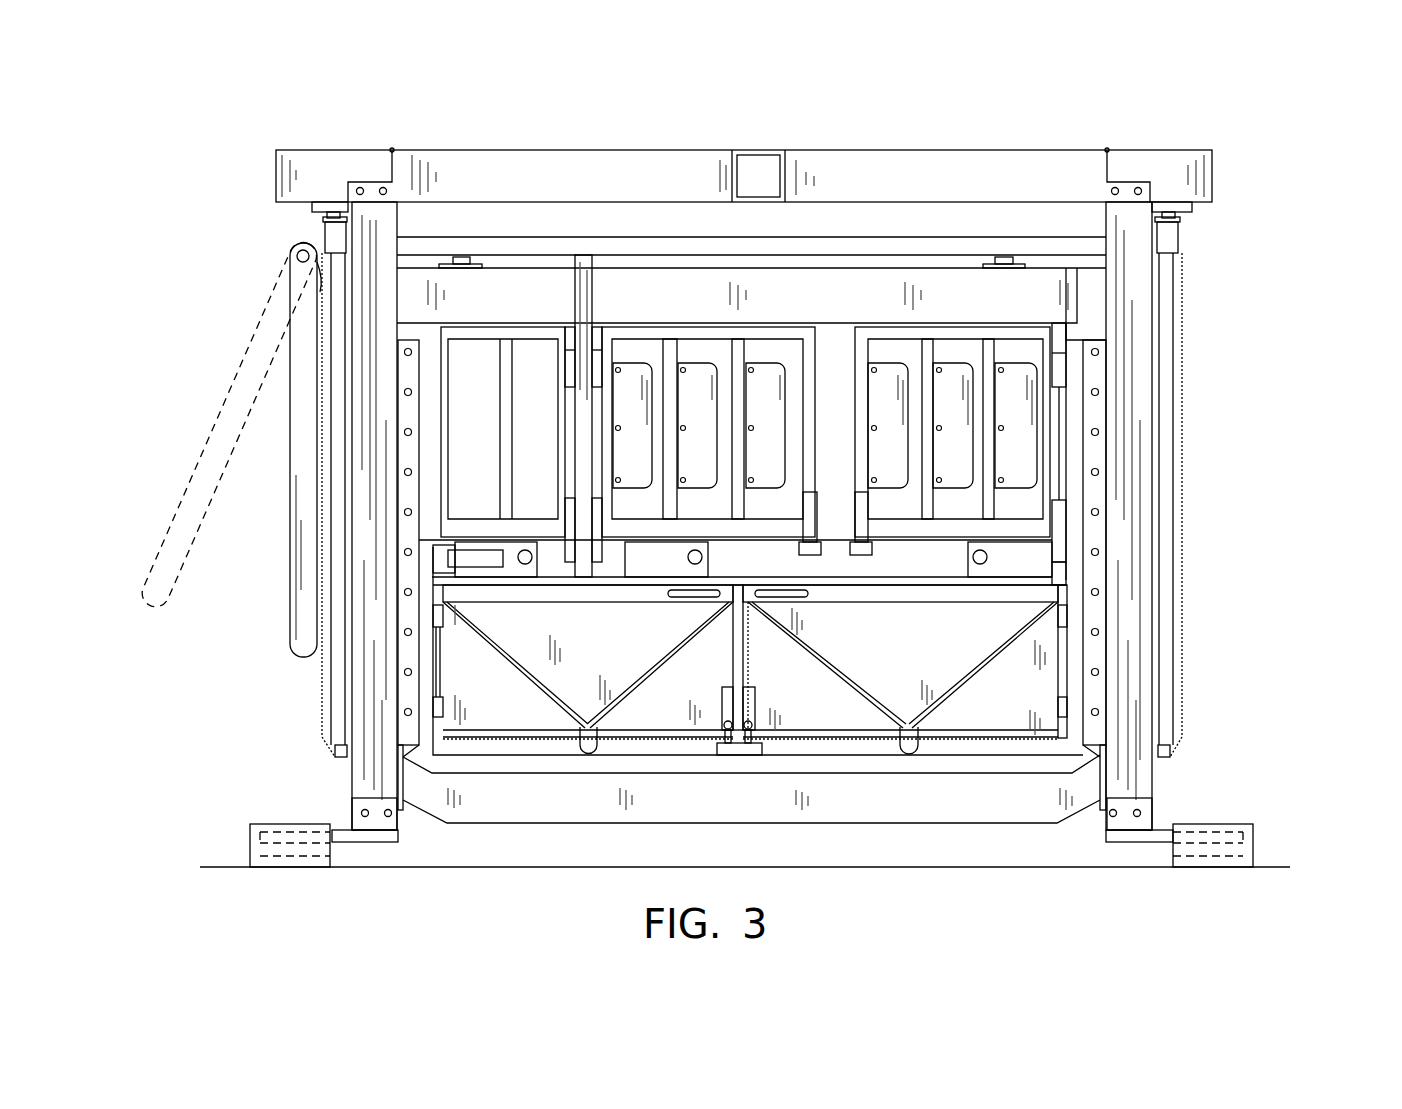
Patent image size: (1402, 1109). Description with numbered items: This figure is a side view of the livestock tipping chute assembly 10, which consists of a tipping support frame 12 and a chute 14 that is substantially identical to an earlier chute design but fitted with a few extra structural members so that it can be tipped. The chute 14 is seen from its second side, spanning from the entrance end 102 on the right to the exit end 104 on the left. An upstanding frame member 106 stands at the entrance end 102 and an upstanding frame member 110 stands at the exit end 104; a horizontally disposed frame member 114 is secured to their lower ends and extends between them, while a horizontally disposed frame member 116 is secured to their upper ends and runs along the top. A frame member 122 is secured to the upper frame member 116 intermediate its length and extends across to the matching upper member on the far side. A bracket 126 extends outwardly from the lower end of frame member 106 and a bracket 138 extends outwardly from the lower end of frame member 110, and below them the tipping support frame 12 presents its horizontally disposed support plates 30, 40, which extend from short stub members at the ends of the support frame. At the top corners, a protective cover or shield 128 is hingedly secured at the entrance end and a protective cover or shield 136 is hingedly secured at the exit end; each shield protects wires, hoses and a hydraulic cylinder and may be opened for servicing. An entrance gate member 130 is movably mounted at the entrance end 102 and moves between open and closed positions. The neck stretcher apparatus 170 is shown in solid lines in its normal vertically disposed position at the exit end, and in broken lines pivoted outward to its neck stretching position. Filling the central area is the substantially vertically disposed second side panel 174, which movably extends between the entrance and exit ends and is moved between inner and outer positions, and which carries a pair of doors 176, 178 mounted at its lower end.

The livestock tipping chute assembly 10 is at (1257, 138).
The tipping support frame 12 is at (1110, 882).
The chute 14 is at (1230, 275).
The support plate 30 is at (1250, 852).
The support plate 40 is at (290, 852).
The entrance end 102 is at (1215, 362).
The exit end 104 is at (232, 346).
The upstanding frame member 106 is at (1135, 632).
The upstanding frame member 110 is at (370, 697).
The horizontally disposed frame member 114 is at (830, 790).
The horizontally disposed frame member 116 is at (890, 158).
The frame member 122 is at (763, 157).
The bracket 126 is at (1160, 828).
The protective cover or shield 128 is at (1155, 165).
The entrance gate member 130 is at (1167, 492).
The protective cover or shield 136 is at (360, 158).
The bracket 138 is at (372, 838).
The neck stretcher apparatus 170 is at (208, 468).
The second side panel 174 is at (951, 258).
The door 176 is at (920, 657).
The door 178 is at (635, 648).